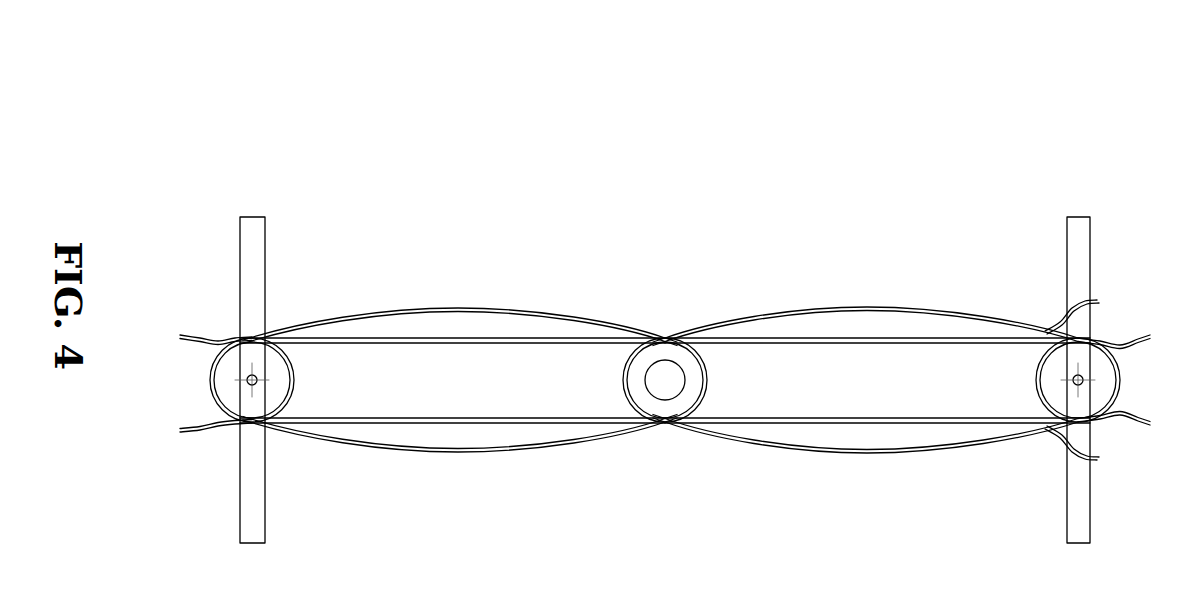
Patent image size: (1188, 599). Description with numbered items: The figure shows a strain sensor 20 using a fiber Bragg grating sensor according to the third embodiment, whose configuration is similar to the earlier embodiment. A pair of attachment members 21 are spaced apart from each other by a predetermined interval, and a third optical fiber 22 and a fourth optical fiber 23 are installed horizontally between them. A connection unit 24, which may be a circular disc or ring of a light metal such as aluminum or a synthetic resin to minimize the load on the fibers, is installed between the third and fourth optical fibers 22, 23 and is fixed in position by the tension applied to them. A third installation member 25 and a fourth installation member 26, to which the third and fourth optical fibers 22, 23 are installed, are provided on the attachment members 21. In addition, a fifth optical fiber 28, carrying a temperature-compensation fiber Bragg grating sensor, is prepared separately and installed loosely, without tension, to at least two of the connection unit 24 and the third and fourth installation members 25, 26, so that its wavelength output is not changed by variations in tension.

The strain sensor 20 is at (233, 93).
The attachment member 21 is at (240, 249).
The third optical fiber 22 is at (787, 338).
The fourth optical fiber 23 is at (477, 338).
The connection unit 24 is at (665, 352).
The third installation member 25 is at (1053, 367).
The fourth installation member 26 is at (270, 363).
The fifth optical fiber 28 is at (845, 307).